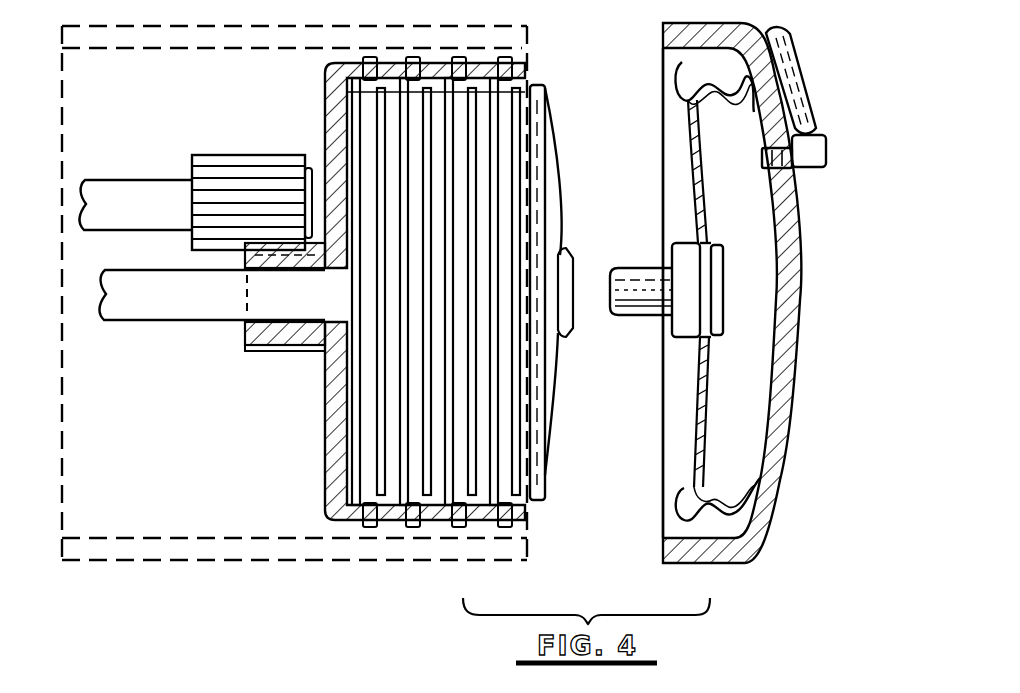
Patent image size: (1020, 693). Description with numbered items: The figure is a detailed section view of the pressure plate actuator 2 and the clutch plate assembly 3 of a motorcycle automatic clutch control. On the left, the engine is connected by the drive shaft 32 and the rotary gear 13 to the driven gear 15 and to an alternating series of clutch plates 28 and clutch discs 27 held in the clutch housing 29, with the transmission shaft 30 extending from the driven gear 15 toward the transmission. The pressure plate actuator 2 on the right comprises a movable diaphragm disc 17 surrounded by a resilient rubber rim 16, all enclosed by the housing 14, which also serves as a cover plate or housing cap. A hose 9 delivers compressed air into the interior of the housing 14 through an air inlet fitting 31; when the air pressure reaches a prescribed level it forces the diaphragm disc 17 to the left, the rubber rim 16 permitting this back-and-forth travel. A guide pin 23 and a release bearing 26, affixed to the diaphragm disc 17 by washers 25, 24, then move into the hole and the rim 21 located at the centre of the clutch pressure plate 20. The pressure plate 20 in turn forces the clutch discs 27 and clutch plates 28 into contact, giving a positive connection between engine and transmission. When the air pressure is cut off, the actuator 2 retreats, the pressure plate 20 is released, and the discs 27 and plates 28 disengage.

The pressure plate actuator 2 is at (642, 162).
The clutch plate assembly 3 is at (538, 68).
The hose 9 is at (800, 78).
The rotary gear 13 is at (190, 150).
The housing 14 is at (808, 272).
The driven gear 15 is at (273, 355).
The rubber rim 16 is at (690, 498).
The diaphragm disc 17 is at (700, 396).
The clutch pressure plate 20 is at (560, 424).
The rim 21 is at (573, 333).
The guide pin 23 is at (644, 258).
The washer 24 is at (750, 342).
The washer 25 is at (698, 243).
The release bearing 26 is at (678, 340).
The clutch discs 27 is at (372, 415).
The clutch plates 28 is at (395, 437).
The clutch housing 29 is at (211, 570).
The transmission shaft 30 is at (172, 303).
The air inlet fitting 31 is at (790, 178).
The drive shaft 32 is at (140, 197).